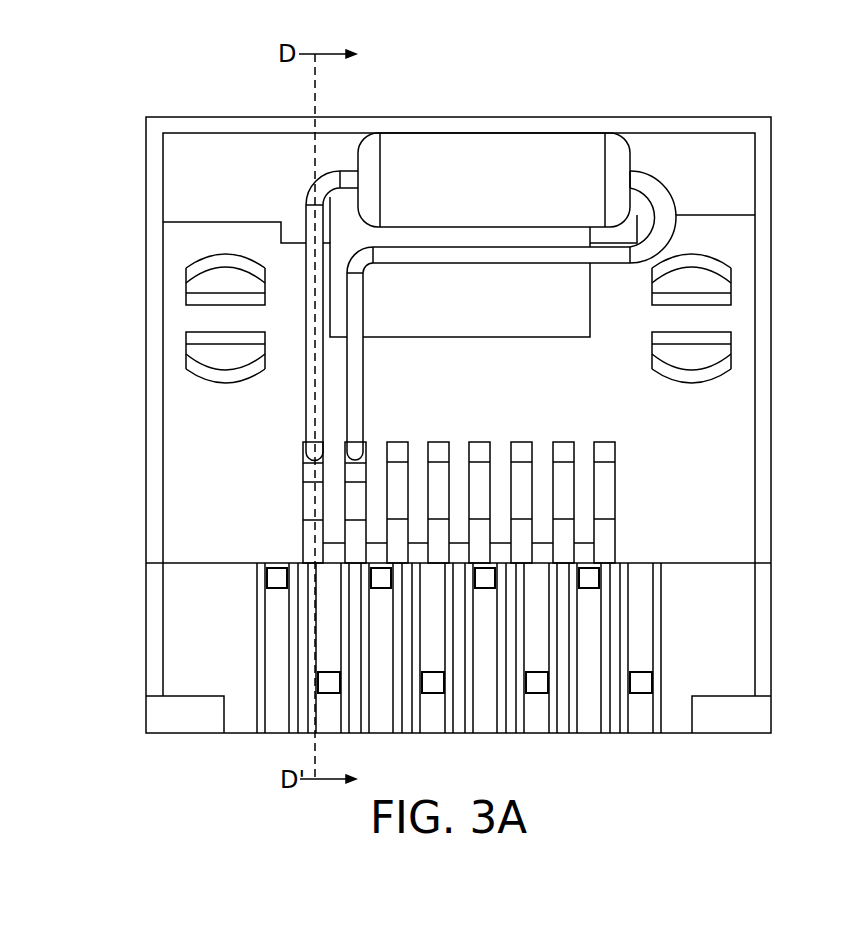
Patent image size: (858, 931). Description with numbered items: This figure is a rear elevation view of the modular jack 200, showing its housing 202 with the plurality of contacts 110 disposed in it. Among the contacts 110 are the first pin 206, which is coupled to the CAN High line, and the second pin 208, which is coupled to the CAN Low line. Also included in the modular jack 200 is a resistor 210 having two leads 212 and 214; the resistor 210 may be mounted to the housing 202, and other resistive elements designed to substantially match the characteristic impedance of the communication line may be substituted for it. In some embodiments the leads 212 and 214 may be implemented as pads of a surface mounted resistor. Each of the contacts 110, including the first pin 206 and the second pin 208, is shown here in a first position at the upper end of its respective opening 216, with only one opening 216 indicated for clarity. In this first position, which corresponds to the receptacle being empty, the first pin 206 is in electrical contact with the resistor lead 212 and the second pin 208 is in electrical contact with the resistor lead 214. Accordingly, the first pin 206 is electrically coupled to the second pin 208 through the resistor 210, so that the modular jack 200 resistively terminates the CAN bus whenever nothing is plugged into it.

The modular jack 200 is at (723, 116).
The housing 202 is at (153, 278).
The Pin 1 206 is at (312, 467).
The Pin 2 208 is at (362, 472).
The resistor 210 is at (629, 155).
The resistor lead 212 is at (303, 391).
The resistor lead 214 is at (355, 347).
The opening 216 is at (622, 440).
The contacts 110 is at (600, 448).